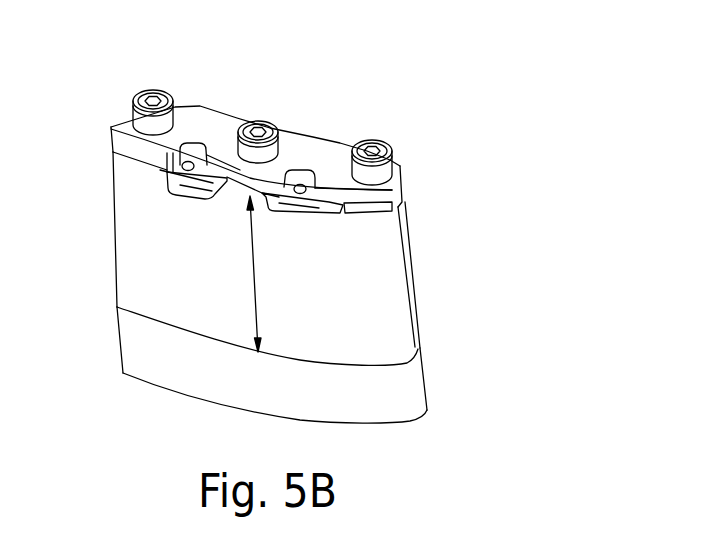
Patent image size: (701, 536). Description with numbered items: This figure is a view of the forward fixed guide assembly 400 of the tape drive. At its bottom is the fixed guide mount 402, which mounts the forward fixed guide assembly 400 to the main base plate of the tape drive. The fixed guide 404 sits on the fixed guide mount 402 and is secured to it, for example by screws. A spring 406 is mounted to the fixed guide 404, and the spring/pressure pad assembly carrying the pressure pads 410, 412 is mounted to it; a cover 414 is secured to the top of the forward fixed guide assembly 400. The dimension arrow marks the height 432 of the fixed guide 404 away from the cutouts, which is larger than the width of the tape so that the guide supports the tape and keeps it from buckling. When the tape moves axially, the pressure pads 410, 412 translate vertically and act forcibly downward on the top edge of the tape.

The forward fixed guide assembly 400 is at (325, 110).
The fixed guide mount 402 is at (405, 382).
The fixed guide 404 is at (392, 290).
The spring 406 is at (405, 210).
The pressure pad 410 is at (167, 167).
The pressure pad 412 is at (331, 212).
The cover 414 is at (403, 169).
The height 432 is at (247, 260).